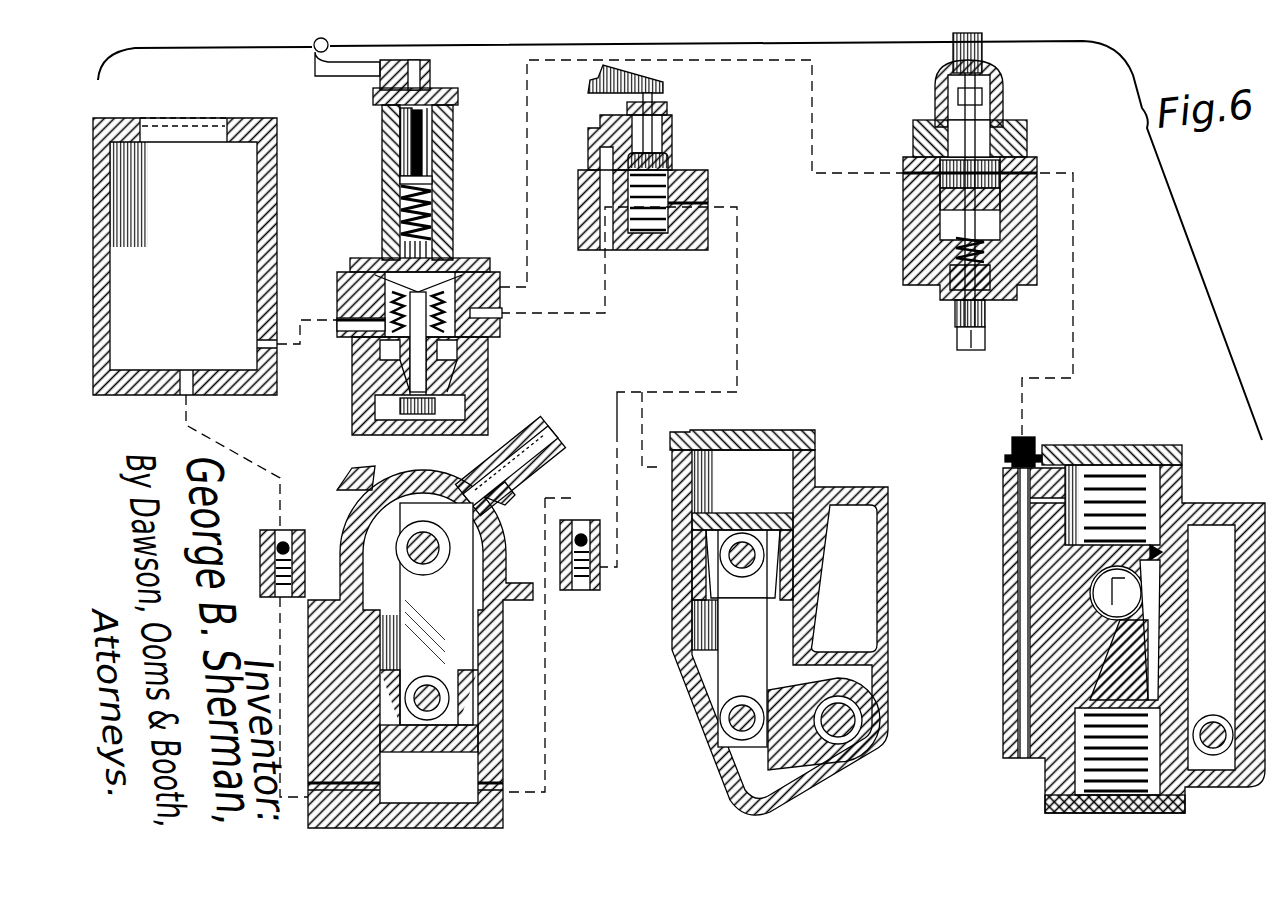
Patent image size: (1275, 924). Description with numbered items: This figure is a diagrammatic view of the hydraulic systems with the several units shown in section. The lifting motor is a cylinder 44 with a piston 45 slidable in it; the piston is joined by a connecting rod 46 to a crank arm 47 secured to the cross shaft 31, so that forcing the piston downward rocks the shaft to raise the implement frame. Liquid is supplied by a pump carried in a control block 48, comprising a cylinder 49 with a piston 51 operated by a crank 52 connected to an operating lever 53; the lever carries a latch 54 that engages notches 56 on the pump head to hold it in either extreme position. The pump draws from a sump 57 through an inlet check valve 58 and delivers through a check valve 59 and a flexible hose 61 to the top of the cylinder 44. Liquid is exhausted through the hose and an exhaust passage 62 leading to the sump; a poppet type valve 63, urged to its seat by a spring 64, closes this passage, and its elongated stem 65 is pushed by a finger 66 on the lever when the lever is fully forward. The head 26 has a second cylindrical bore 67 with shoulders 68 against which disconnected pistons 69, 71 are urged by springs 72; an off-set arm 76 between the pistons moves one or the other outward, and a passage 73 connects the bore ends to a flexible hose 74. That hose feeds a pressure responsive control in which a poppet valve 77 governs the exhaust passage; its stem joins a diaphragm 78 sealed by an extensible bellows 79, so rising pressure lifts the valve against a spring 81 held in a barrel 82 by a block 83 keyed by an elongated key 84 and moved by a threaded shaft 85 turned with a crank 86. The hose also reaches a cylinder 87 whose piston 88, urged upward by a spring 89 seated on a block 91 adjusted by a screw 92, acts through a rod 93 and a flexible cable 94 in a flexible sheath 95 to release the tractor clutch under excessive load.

The head 26 is at (690, 610).
The cross shaft 31 is at (850, 725).
The cylinder 44 is at (780, 477).
The piston 45 is at (700, 523).
The connecting rod 46 is at (767, 668).
The crank arm 47 is at (773, 748).
The control block 48 is at (271, 152).
The cylinder 49 is at (463, 640).
The piston 51 is at (458, 732).
The crank 52 is at (432, 548).
The operating lever 53 is at (542, 452).
The latch 54 is at (522, 470).
The notches 56 is at (345, 485).
The sump 57 is at (237, 228).
The inlet check valve 58 is at (292, 550).
The check valve 59 is at (583, 533).
The flexible hose 61 is at (644, 414).
The exhaust passage 62 is at (740, 338).
The poppet type valve 63 is at (655, 158).
The spring 64 is at (648, 236).
The stem 65 is at (652, 100).
The finger 66 is at (655, 85).
The second cylindrical bore 67 is at (1155, 488).
The shoulders 68 is at (1160, 570).
The piston 69 is at (1160, 553).
The piston 71 is at (1125, 655).
The springs 72 is at (1110, 445).
The passage 73 is at (1030, 576).
The flexible hose 74 is at (1075, 326).
The off-set arm 76 is at (1095, 595).
The poppet valve 77 is at (435, 405).
The diaphragm 78 is at (452, 260).
The extensible bellows 79 is at (430, 288).
The spring 81 is at (433, 201).
The barrel 82 is at (432, 176).
The block 83 is at (400, 148).
The elongated key 84 is at (438, 118).
The threaded shaft 85 is at (400, 122).
The crank 86 is at (328, 74).
The cylinder 87 is at (940, 198).
The piston 88 is at (945, 208).
The spring 89 is at (956, 250).
The block 91 is at (950, 270).
The screw 92 is at (957, 330).
The rod 93 is at (982, 100).
The flexible cable 94 is at (1003, 82).
The flexible sheath 95 is at (985, 40).